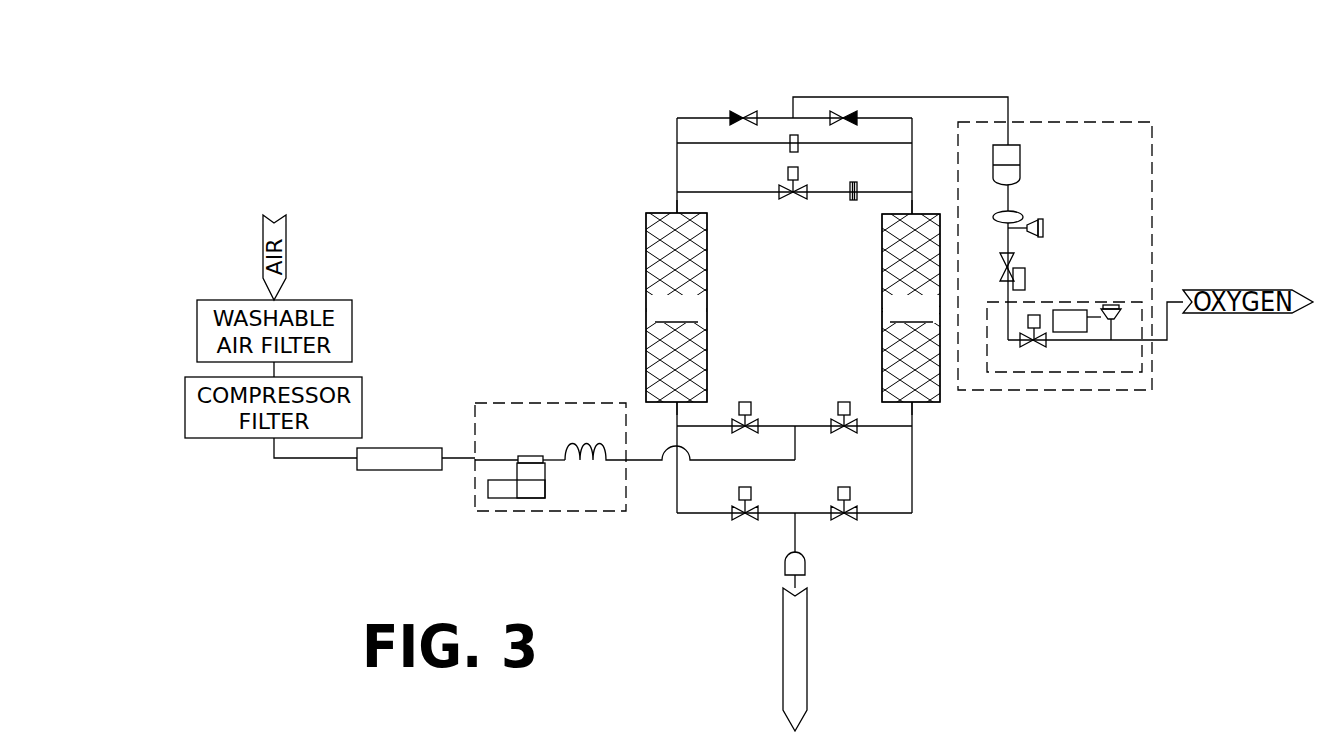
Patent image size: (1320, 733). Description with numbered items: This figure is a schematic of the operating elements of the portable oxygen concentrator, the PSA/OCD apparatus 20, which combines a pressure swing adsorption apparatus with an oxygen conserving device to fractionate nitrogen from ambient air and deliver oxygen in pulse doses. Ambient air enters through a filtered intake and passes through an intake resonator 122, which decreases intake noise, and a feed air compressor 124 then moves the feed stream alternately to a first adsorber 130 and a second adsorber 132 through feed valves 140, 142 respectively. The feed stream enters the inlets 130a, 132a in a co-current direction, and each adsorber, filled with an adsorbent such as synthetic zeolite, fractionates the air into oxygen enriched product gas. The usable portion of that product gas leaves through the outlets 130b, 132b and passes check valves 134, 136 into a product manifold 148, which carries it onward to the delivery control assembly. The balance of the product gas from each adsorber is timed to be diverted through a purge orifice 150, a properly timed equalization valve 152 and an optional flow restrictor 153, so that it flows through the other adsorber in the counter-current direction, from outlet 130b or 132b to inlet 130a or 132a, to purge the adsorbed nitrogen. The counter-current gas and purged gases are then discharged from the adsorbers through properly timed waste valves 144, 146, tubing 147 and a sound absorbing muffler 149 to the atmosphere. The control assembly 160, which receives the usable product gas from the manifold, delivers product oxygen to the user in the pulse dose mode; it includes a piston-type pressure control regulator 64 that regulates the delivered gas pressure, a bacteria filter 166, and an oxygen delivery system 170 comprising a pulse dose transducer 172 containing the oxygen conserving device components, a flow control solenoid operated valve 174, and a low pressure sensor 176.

The PSA/OCD apparatus 20 is at (572, 159).
The piston-type pressure control regulator 64 is at (1019, 268).
The intake resonator 122 is at (427, 448).
The feed air compressor 124 is at (538, 512).
The first adsorber 130 is at (676, 307).
The inlet of first adsorber 130a is at (675, 402).
The outlet of first adsorber 130b is at (677, 210).
The second adsorber 132 is at (911, 308).
The inlet of second adsorber 132a is at (912, 403).
The outlet of second adsorber 132b is at (911, 213).
The check valve 134 is at (745, 112).
The check valve 136 is at (842, 112).
The feed valve 140 is at (745, 400).
The feed valve 142 is at (843, 398).
The waste valve 144 is at (750, 522).
The waste valve 146 is at (848, 525).
The tubing 147 is at (794, 537).
The product manifold 148 is at (973, 96).
The sound absorbing muffler 149 is at (807, 563).
The purge orifice 150 is at (793, 152).
The equalization valve 152 is at (786, 198).
The flow restrictor 153 is at (857, 182).
The control assembly 160 is at (1073, 392).
The bacteria filter 166 is at (1018, 213).
The oxygen delivery system 170 is at (1127, 373).
The pulse dose transducer 172 is at (1077, 310).
The flow control solenoid operated valve 174 is at (1034, 310).
The low pressure sensor 176 is at (1123, 307).